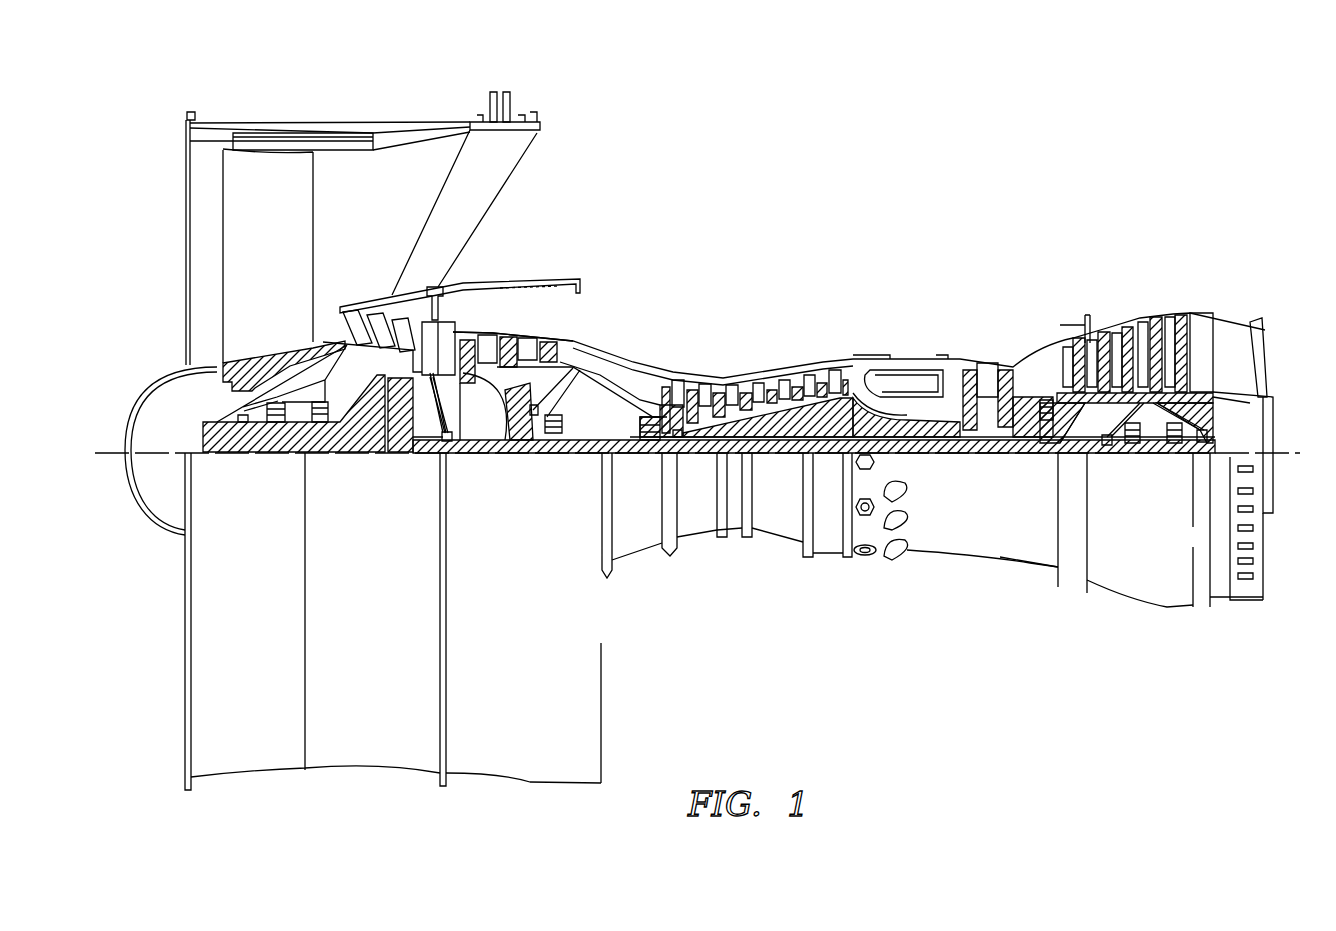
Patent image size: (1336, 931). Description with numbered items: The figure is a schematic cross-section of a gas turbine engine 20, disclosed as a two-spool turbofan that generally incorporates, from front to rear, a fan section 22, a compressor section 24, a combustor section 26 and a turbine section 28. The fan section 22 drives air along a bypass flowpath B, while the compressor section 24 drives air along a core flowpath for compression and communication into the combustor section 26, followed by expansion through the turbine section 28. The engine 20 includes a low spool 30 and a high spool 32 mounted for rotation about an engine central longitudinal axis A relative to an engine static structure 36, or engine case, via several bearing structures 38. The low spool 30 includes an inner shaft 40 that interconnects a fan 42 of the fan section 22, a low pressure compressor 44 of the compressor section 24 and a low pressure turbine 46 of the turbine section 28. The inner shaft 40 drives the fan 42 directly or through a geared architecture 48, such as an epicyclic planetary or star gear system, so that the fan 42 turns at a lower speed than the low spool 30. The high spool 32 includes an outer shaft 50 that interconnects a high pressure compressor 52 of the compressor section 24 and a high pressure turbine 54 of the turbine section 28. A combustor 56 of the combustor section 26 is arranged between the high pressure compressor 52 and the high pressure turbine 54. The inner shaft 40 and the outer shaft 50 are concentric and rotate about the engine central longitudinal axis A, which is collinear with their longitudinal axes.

The gas turbine engine 20 is at (1026, 174).
The fan section 22 is at (180, 102).
The compressor section 24 is at (453, 243).
The combustor section 26 is at (853, 243).
The turbine section 28 is at (1200, 243).
The low spool 30 is at (779, 464).
The high spool 32 is at (818, 380).
The engine static structure 36 is at (830, 560).
The bearing structures 38 is at (473, 510).
The inner shaft 40 is at (628, 456).
The fan 42 is at (245, 270).
The low pressure compressor 44 is at (527, 340).
The low pressure turbine 46 is at (1128, 318).
The geared architecture 48 is at (392, 437).
The outer shaft 50 is at (900, 437).
The high pressure compressor 52 is at (762, 418).
The high pressure turbine 54 is at (985, 363).
The combustor 56 is at (908, 392).
The engine central longitudinal axis A is at (1297, 452).
The bypass flowpath B is at (396, 198).